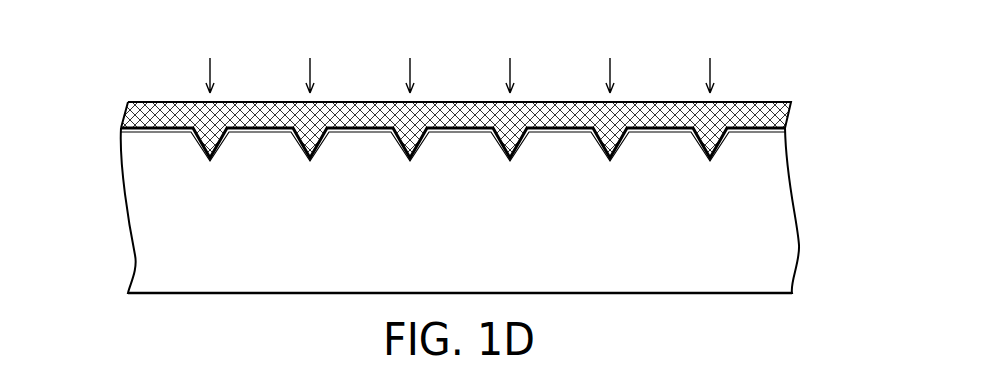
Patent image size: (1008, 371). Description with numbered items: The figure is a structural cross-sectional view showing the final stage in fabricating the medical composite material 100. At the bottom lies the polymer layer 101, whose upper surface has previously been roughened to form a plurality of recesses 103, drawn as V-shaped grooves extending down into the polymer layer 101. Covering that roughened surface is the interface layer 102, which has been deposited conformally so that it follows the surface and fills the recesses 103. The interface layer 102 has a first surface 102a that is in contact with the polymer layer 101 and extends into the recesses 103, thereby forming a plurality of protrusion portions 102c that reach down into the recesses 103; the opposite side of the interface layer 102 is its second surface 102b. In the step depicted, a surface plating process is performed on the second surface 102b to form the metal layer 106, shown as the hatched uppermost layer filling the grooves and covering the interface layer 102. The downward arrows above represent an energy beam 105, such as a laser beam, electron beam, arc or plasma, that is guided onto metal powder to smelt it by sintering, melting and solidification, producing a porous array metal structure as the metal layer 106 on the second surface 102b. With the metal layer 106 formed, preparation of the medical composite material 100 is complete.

The medical composite material 100 is at (93, 53).
The polymer layer 101 is at (773, 253).
The interface layer 102 is at (785, 128).
The first surface 102a is at (658, 131).
The second surface 102b is at (740, 126).
The protrusion portions 102c is at (709, 162).
The recesses 103 is at (718, 143).
The energy beam 105 is at (712, 72).
The metal layer 106 is at (789, 110).